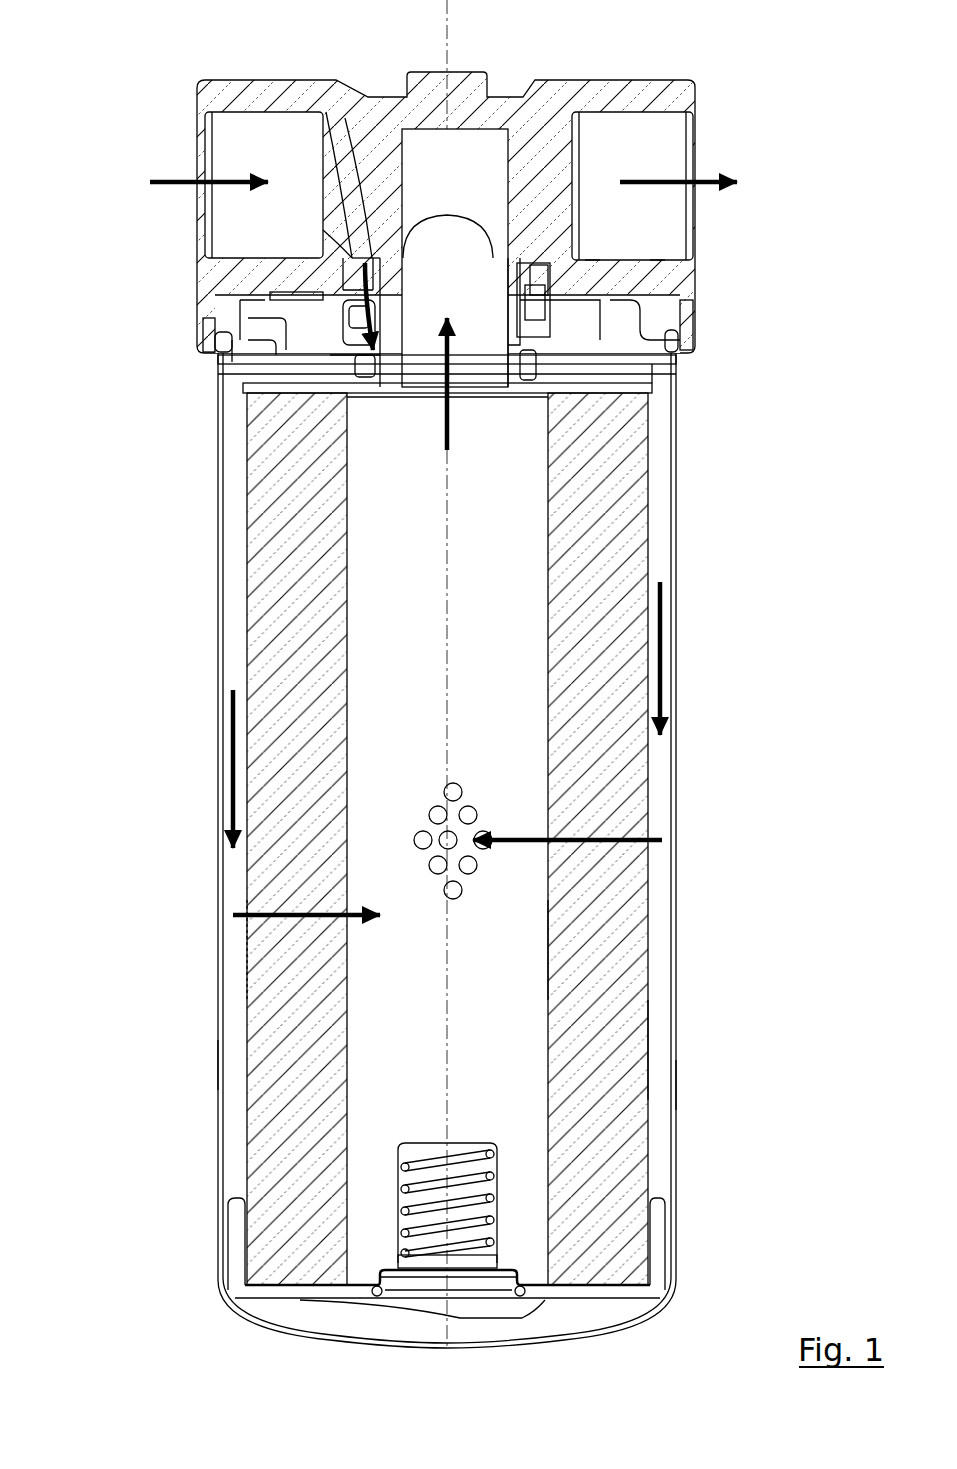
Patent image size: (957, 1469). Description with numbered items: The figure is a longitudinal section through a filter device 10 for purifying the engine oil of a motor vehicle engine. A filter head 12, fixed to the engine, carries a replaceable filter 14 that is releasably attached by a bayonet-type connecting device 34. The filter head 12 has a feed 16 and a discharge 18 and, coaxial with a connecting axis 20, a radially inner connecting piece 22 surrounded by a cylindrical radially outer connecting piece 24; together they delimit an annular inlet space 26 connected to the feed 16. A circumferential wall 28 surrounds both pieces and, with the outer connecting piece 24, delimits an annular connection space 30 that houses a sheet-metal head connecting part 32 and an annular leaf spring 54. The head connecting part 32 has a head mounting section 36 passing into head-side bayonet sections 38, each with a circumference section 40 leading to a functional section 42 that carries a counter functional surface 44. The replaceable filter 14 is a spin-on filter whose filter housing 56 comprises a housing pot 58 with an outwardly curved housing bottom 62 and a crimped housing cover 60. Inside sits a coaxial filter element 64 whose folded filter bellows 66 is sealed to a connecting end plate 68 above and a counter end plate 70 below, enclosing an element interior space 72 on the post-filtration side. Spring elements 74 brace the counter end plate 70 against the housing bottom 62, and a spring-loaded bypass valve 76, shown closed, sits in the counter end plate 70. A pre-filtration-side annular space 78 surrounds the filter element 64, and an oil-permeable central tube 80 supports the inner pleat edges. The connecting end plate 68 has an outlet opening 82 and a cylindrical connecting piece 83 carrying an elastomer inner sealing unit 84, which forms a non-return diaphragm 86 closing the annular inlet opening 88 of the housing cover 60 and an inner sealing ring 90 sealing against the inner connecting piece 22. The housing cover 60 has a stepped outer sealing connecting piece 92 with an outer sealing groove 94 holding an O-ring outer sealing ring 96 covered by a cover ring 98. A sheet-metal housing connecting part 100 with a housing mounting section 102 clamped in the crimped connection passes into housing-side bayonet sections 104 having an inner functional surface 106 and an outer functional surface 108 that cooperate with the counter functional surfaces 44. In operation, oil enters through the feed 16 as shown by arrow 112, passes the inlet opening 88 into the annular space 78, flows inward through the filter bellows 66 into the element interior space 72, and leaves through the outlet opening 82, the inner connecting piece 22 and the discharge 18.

The filter device 10 is at (148, 50).
The filter head 12 is at (270, 76).
The replaceable filter 14 is at (208, 876).
The feed 16 is at (225, 147).
The discharge 18 is at (660, 131).
The connecting axis 20 is at (447, 1022).
The radially inner connecting piece 22 is at (398, 303).
The radially outer connecting piece 24 is at (302, 260).
The annular inlet space 26 is at (358, 262).
The circumferential wall 28 is at (688, 312).
The connection space 30 is at (668, 303).
The head connecting part 32 is at (270, 260).
The releasable bayonet-type connecting device 34 is at (243, 322).
The head mounting section 36 is at (592, 260).
The head-side bayonet section 38 is at (630, 260).
The circumference section 40 is at (550, 385).
The functional section 42 is at (603, 372).
The counter functional surface 44 is at (657, 260).
The annular leaf spring 54 is at (268, 292).
The filter housing 56 is at (219, 673).
The housing pot 58 is at (218, 1065).
The housing cover 60 is at (245, 382).
The housing bottom 62 is at (262, 1318).
The filter element 64 is at (246, 955).
The filter bellows 66 is at (618, 1062).
The connecting end plate 68 is at (652, 390).
The counter end plate 70 is at (225, 1265).
The element interior space 72 is at (503, 1047).
The spring element 74 is at (665, 1300).
The bypass valve 76 is at (448, 1168).
The pre-filtration-side annular space 78 is at (676, 1088).
The central tube 80 is at (540, 945).
The outlet opening 82 is at (470, 398).
The cylindrical connecting piece 83 is at (478, 399).
The inner sealing unit 84 is at (358, 392).
The non-return diaphragm 86 is at (352, 398).
The inlet opening 88 is at (340, 405).
The inner sealing ring 90 is at (382, 393).
The outer sealing connecting piece 92 is at (520, 355).
The outer sealing groove 94 is at (517, 330).
The outer sealing ring 96 is at (520, 300).
The cover ring 98 is at (543, 262).
The housing connecting part 100 is at (248, 337).
The housing mounting section 102 is at (215, 362).
The housing-side bayonet section 104 is at (652, 297).
The inner functional surface 106 is at (250, 398).
The outer functional surface 108 is at (238, 300).
The arrow 112 is at (150, 182).